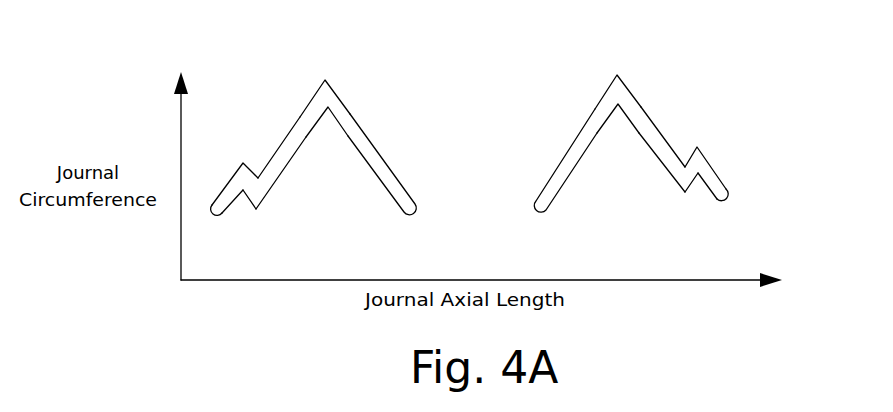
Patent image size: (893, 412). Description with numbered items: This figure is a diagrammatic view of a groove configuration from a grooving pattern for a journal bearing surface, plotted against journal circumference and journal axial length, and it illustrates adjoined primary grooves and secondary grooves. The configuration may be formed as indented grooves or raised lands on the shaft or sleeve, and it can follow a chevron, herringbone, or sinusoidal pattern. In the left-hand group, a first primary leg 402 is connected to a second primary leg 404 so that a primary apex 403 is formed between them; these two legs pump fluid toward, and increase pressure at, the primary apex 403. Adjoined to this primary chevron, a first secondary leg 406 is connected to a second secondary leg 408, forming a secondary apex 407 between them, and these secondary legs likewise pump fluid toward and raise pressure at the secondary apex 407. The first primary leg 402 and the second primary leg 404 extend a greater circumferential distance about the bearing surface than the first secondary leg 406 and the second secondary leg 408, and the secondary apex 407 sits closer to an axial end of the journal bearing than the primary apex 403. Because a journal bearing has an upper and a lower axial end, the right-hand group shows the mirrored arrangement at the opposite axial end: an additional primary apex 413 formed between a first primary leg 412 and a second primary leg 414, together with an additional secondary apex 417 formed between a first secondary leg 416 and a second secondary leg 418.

The first primary leg 402 is at (372, 142).
The primary apex 403 is at (325, 80).
The second primary leg 404 is at (289, 138).
The first secondary leg 406 is at (250, 198).
The secondary apex 407 is at (243, 170).
The second secondary leg 408 is at (213, 206).
The first primary leg 412 is at (572, 148).
The additional primary apex 413 is at (616, 73).
The second primary leg 414 is at (655, 130).
The first secondary leg 416 is at (689, 170).
The additional secondary apex 417 is at (698, 151).
The second secondary leg 418 is at (722, 182).